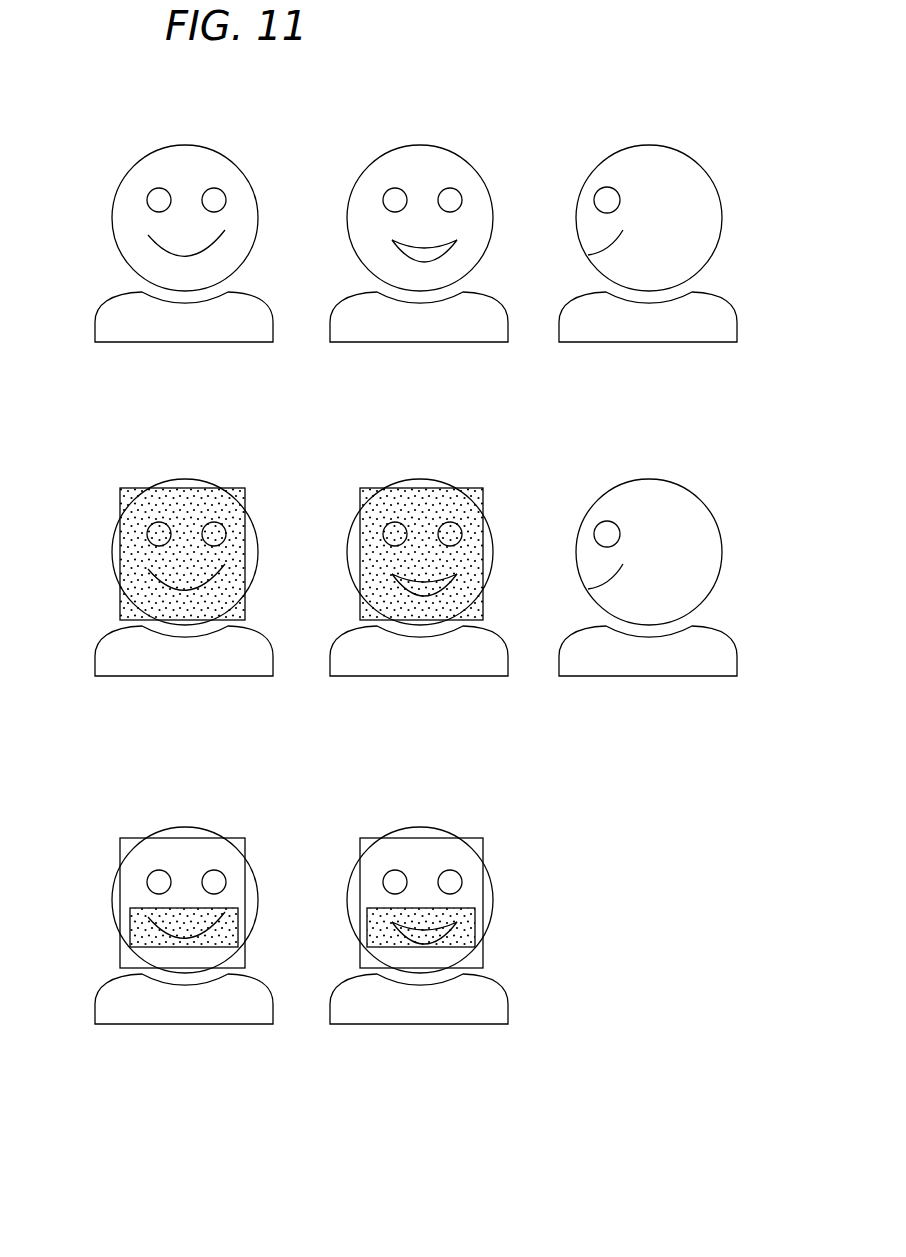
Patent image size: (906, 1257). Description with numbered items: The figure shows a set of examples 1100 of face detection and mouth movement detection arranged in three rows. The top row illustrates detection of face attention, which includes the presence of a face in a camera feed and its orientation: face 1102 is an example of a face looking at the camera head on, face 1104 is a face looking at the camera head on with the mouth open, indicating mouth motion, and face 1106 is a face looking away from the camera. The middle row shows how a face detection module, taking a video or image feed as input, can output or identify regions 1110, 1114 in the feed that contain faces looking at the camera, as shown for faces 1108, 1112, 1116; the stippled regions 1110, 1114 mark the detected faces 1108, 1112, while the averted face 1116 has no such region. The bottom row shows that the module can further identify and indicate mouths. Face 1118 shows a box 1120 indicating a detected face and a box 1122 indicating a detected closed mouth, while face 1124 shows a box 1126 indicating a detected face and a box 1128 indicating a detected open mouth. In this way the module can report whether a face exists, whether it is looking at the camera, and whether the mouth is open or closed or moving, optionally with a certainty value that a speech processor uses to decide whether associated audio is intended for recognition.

The set of avatar representations 1100 is at (508, 112).
The face 1102 is at (185, 342).
The face 1104 is at (419, 286).
The face 1106 is at (648, 286).
The face 1108 is at (156, 620).
The region 1110 is at (142, 556).
The face 1112 is at (382, 556).
The region 1114 is at (395, 620).
The face 1116 is at (648, 620).
The face 1118 is at (156, 968).
The box 1120 is at (142, 898).
The box 1122 is at (145, 914).
The face 1124 is at (394, 968).
The box 1126 is at (382, 898).
The box 1128 is at (382, 914).